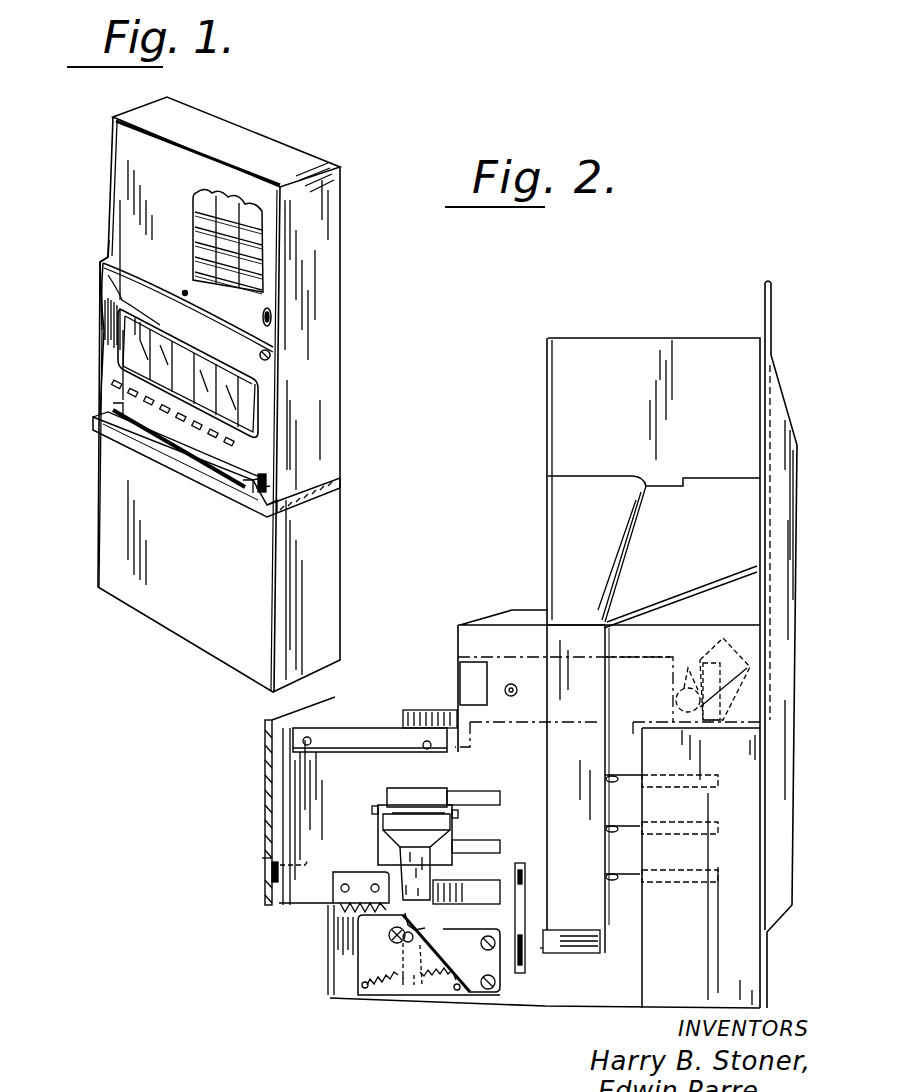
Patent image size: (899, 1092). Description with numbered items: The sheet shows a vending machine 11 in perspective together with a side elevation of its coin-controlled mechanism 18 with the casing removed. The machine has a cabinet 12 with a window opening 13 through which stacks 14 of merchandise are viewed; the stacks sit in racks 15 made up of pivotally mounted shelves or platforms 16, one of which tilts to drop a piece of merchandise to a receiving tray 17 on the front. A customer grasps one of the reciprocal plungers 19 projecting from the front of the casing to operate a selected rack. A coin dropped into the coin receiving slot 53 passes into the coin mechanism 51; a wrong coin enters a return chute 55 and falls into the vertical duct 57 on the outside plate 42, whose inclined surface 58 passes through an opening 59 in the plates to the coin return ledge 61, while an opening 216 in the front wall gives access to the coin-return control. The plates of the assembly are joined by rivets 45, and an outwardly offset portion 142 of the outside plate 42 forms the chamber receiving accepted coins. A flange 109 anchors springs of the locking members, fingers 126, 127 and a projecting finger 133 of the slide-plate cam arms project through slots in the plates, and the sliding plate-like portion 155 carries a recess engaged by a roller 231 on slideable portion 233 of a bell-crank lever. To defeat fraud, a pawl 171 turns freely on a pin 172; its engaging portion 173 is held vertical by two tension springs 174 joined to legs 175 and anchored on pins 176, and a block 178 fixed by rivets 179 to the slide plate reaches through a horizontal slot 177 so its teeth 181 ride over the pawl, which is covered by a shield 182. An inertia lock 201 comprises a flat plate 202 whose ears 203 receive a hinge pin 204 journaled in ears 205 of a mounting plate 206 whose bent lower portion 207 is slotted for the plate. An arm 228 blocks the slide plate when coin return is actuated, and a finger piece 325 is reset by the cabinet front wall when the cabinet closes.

In FIG. 1, the vending machine 11 is at (326, 158).
In FIG. 1, the cabinet 12 is at (116, 244).
In FIG. 2, the cabinet 12 is at (264, 745).
In FIG. 1, the window opening 13 is at (125, 348).
In FIG. 1, the stacks of merchandise 14 is at (240, 330).
In FIG. 1, the racks 15 is at (262, 268).
In FIG. 1, the shelves or platforms 16 is at (228, 206).
In FIG. 1, the receiving tray 17 is at (112, 440).
In FIG. 2, the coin-controlled mechanism 18 is at (477, 618).
In FIG. 1, the reciprocal plungers 19 is at (218, 445).
In FIG. 2, the outside plate 42 is at (322, 778).
In FIG. 2, the rivets 45 is at (506, 686).
In FIG. 2, the coin mechanism 51 is at (545, 438).
In FIG. 1, the coin receiving slot 53 is at (272, 318).
In FIG. 2, the return chute 55 is at (575, 505).
In FIG. 2, the vertical duct 57 is at (576, 722).
In FIG. 2, the inclined surface 58 is at (575, 950).
In FIG. 2, the opening 59 is at (540, 945).
In FIG. 1, the coin return ledge 61 is at (268, 484).
In FIG. 2, the flange 109 is at (764, 326).
In FIG. 2, the finger 126 is at (612, 825).
In FIG. 2, the finger 127 is at (612, 872).
In FIG. 2, the projecting finger 133 is at (612, 772).
In FIG. 2, the outwardly offset portion 142 is at (747, 977).
In FIG. 2, the plate-like portion 155 is at (624, 664).
In FIG. 2, the pawl 171 is at (397, 942).
In FIG. 2, the pin 172 is at (390, 936).
In FIG. 2, the engaging portion 173 is at (400, 912).
In FIG. 2, the tension springs 174 is at (382, 990).
In FIG. 2, the legs 175 is at (414, 985).
In FIG. 2, the pins 176 is at (460, 990).
In FIG. 2, the horizontal slot 177 is at (278, 866).
In FIG. 2, the block 178 is at (272, 878).
In FIG. 2, the rivets 179 is at (340, 892).
In FIG. 2, the teeth 181 is at (345, 915).
In FIG. 2, the cover plate or shield 182 is at (395, 940).
In FIG. 2, the inertia lock 201 is at (373, 805).
In FIG. 2, the flat plate 202 is at (410, 812).
In FIG. 2, the ears 203 is at (448, 800).
In FIG. 2, the hinge pin 204 is at (410, 812).
In FIG. 2, the ears 205 is at (376, 828).
In FIG. 2, the mounting plate 206 is at (388, 850).
In FIG. 2, the bent lower portion 207 is at (450, 868).
In FIG. 1, the opening 216 is at (271, 357).
In FIG. 2, the arm 228 is at (526, 912).
In FIG. 2, the roller 231 is at (688, 680).
In FIG. 2, the slideable portion 233 is at (703, 672).
In FIG. 2, the finger piece 325 is at (272, 860).